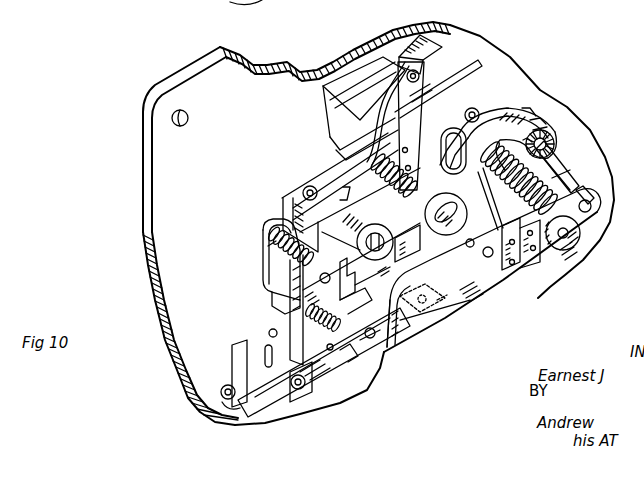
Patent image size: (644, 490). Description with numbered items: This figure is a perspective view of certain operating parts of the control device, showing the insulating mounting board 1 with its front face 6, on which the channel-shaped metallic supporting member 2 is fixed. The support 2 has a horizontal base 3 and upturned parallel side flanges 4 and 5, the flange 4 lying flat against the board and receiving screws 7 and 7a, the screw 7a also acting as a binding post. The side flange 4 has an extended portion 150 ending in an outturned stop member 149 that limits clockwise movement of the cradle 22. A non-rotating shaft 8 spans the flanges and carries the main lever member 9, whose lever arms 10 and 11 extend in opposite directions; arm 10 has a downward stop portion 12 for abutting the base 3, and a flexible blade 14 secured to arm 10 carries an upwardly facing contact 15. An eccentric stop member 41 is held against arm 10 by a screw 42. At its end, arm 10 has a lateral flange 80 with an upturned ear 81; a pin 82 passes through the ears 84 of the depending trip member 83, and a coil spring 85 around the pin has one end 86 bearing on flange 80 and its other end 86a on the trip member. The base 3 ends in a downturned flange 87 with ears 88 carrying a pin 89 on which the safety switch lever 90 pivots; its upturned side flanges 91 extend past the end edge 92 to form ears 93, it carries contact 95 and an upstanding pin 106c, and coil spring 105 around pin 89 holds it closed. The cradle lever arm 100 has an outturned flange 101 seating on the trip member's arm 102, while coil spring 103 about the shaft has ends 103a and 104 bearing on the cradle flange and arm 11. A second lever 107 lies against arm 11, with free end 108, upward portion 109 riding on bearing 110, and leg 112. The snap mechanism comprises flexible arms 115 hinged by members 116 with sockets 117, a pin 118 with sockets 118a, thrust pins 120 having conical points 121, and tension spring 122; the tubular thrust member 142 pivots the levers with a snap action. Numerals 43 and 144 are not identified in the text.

The supporting member or mounting board 1 is at (174, 79).
The metallic supporting member or bracket 2 is at (473, 316).
The base portion 3 is at (400, 313).
The side flange 4 is at (340, 157).
The side flange 5 is at (500, 287).
The front face of the board 6 is at (166, 161).
The screw 7 is at (420, 72).
The screw 7a is at (317, 195).
The shaft or pin 8 is at (455, 248).
The main lever member 9 is at (438, 253).
The lever arm 10 is at (360, 250).
The lever arm 11 is at (522, 108).
The downwardly directed extended portion 12 is at (363, 278).
The flexible blade 14 is at (368, 350).
The contact member 15 is at (302, 383).
The cradle 22 is at (327, 98).
The adjustable stop member 41 is at (424, 248).
The screw 42 is at (387, 247).
The hole 43 is at (438, 305).
The laterally extending flange portion 80 is at (275, 294).
The upturned flange portion or ear 81 is at (257, 261).
The pin 82 is at (320, 277).
The lever or trip member 83 is at (267, 313).
The ears 84 is at (280, 222).
The coil spring 85 is at (267, 236).
The spring end 86 is at (341, 307).
The spring end 86a is at (272, 249).
The downturned flange portion 87 is at (338, 281).
The ears 88 is at (345, 352).
The pin 89 is at (361, 330).
The contact supporting member or lever 90 is at (252, 399).
The upturned side flanges 91 is at (235, 353).
The end edge 92 is at (264, 361).
The ears 93 is at (215, 345).
The contact member 95 is at (225, 389).
The lever arm 100 is at (317, 173).
The outturned flange portion 101 is at (288, 212).
The extended portion or arm 102 is at (350, 204).
The coil spring 103 is at (372, 165).
The spring end 103a is at (405, 120).
The spring end 104 is at (442, 172).
The coil spring 105 is at (320, 321).
The upstanding pin 106c is at (243, 399).
The second lever member 107 is at (537, 117).
The free end 108 is at (498, 139).
The upwardly directed extended portion 109 is at (348, 198).
The cylindrical bearing member 110 is at (447, 203).
The leg 112 is at (506, 265).
The arms 115 is at (596, 222).
The hinge members 116 is at (515, 268).
The conical recesses or sockets 117 is at (597, 203).
The pin 118 is at (560, 133).
The recesses or sockets 118a is at (560, 141).
The thrust members 120 is at (557, 178).
The conical points 121 is at (545, 140).
The tension spring 122 is at (547, 156).
The tubular thrust member 142 is at (410, 190).
The bracket 144 is at (441, 295).
The stop member 149 is at (437, 42).
The extended portion 150 is at (410, 97).